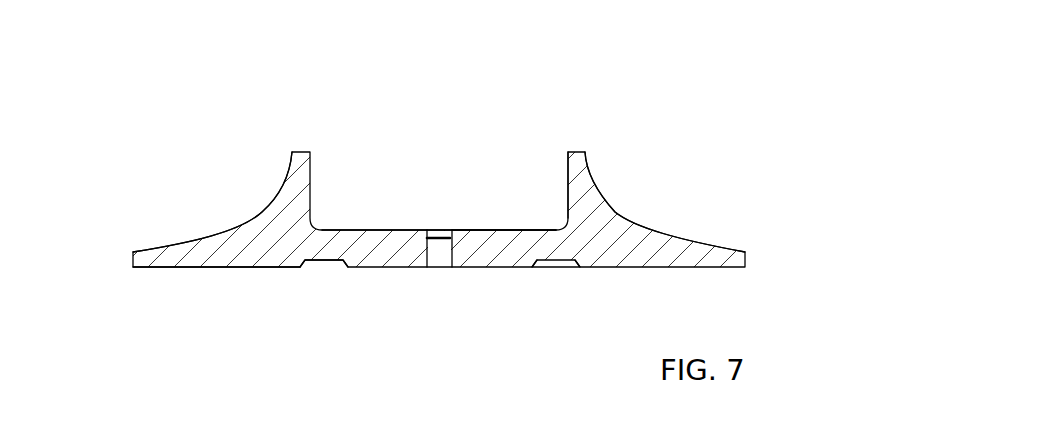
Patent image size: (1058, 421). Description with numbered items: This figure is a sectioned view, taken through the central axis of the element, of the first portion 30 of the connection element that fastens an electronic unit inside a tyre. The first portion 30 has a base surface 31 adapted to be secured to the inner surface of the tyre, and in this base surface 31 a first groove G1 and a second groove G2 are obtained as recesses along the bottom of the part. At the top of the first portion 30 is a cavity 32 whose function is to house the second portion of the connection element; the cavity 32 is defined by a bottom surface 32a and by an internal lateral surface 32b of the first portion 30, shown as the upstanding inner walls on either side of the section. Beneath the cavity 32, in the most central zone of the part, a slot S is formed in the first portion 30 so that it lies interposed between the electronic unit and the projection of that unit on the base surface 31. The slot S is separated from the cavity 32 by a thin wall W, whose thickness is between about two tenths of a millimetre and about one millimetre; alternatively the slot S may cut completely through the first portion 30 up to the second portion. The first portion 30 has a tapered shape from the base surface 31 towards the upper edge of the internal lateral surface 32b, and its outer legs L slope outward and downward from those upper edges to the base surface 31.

The first portion 30 is at (647, 208).
The base surface 31 is at (183, 267).
The cavity 32 is at (373, 200).
The bottom surface 32a is at (468, 230).
The internal lateral surface 32b is at (568, 179).
The thin wall W is at (438, 237).
The slot S is at (438, 257).
The first groove G1 is at (555, 265).
The second groove G2 is at (325, 265).
The leg L is at (250, 220).